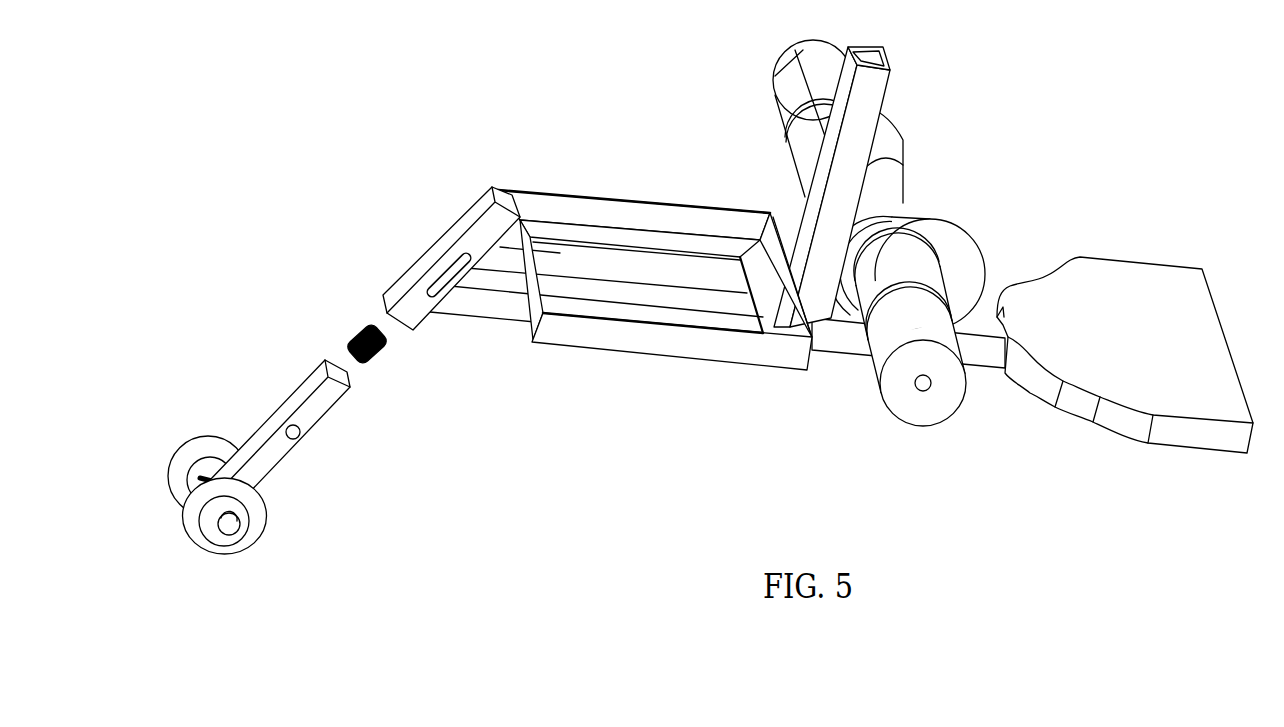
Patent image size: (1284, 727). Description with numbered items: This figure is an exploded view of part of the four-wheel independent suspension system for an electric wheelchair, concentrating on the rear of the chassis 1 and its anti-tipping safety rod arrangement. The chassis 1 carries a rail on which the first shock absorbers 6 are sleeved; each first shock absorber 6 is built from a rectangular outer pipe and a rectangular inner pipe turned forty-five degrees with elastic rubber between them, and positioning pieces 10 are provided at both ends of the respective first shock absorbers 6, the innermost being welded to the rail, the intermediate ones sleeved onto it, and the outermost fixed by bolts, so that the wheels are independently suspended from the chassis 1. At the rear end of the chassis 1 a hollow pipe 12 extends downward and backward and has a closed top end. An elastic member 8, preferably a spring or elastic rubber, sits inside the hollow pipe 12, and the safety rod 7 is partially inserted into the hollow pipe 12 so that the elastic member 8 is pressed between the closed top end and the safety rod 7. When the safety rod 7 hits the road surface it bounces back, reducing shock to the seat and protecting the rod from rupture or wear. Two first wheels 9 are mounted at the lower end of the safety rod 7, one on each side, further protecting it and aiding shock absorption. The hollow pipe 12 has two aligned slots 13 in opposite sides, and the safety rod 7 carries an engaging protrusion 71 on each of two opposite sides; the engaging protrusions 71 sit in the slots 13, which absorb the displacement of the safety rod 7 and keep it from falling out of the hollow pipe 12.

The chassis 1 is at (602, 288).
The first shock absorber 6 is at (880, 143).
The safety rod 7 is at (303, 397).
The elastic member 8 is at (350, 330).
The first wheel 9 is at (282, 457).
The positioning piece 10 is at (947, 393).
The hollow pipe 12 is at (439, 281).
The slot 13 is at (451, 276).
The engaging protrusion 71 is at (300, 433).